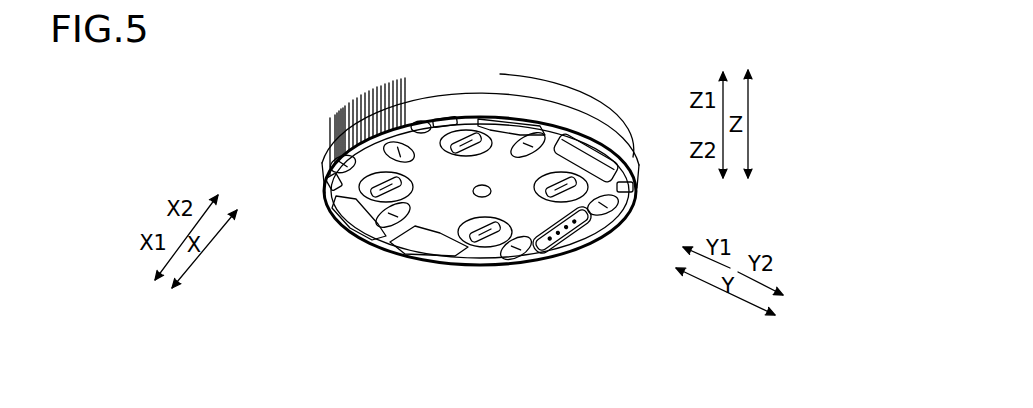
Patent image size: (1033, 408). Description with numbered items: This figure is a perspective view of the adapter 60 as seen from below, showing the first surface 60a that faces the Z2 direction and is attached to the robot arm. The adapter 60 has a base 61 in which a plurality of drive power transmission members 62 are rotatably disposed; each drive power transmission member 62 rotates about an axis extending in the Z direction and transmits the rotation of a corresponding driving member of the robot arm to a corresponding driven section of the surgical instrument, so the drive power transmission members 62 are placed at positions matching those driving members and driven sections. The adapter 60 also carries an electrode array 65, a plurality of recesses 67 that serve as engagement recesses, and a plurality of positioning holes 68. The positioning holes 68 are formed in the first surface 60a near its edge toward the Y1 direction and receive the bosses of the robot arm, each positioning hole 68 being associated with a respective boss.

The adapter 60 is at (315, 95).
The first surface 60a is at (467, 207).
The base 61 is at (417, 92).
The drive power transmission member 62 is at (387, 197).
The electrode array 65 is at (560, 254).
The recess 67 is at (345, 158).
The positioning hole 68 is at (421, 118).